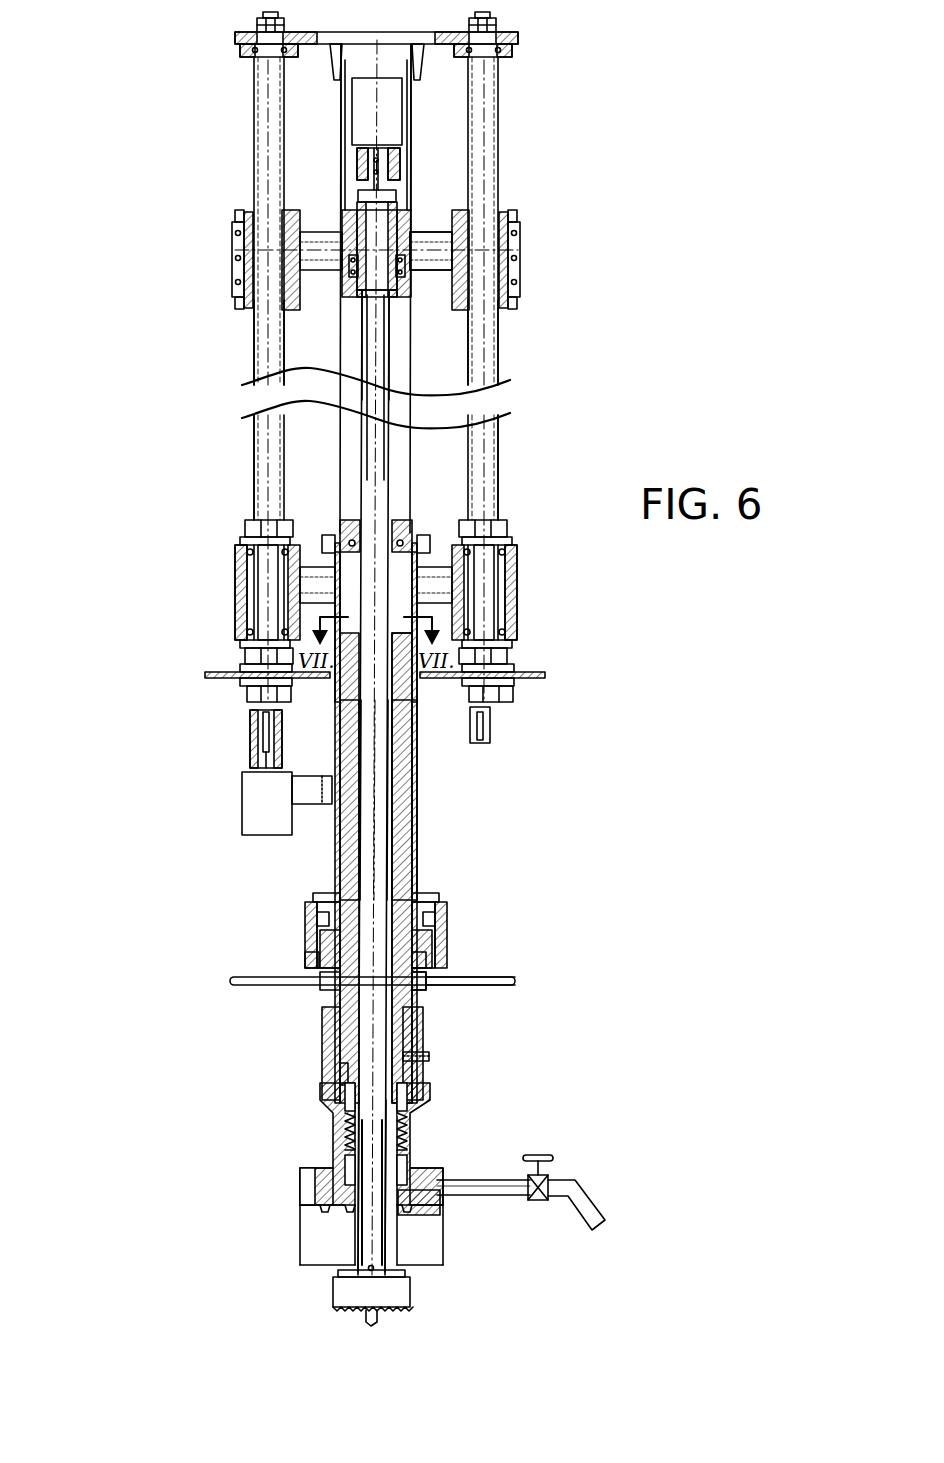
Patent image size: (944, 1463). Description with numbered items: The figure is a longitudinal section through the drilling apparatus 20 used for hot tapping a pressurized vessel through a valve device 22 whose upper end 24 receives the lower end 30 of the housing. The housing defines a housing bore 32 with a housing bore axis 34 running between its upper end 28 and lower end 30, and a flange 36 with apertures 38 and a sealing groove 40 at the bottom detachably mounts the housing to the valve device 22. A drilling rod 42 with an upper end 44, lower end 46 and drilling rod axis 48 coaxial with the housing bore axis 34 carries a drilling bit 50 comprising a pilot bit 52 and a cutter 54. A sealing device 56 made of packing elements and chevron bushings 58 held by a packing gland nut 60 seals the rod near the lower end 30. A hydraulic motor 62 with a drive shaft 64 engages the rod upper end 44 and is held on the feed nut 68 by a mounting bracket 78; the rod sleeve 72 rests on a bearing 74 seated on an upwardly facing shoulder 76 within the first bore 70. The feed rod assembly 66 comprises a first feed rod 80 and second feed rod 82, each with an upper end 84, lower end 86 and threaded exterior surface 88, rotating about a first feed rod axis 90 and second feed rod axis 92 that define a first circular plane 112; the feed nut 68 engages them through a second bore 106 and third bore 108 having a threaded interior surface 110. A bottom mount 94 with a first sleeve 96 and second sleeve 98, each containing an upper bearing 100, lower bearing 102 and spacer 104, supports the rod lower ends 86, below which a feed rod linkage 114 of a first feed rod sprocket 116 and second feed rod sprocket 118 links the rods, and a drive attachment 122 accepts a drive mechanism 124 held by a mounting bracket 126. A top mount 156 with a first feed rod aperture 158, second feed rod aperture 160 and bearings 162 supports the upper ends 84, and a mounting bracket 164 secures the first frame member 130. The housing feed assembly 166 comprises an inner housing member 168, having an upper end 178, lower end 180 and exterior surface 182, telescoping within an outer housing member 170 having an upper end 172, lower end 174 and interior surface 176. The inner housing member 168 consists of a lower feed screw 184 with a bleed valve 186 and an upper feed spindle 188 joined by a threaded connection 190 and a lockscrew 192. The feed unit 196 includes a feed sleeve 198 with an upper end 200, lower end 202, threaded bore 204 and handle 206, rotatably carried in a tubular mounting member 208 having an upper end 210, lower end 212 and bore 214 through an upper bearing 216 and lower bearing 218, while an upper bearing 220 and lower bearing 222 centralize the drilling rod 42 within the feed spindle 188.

The drilling apparatus 20 is at (112, 240).
The valve device 22 is at (305, 1247).
The upper end 24 is at (325, 1227).
The upper end 28 is at (405, 530).
The lower end 30 is at (325, 1210).
The housing bore 32 is at (380, 832).
The housing bore axis 34 is at (372, 870).
The flange 36 is at (432, 1180).
The apertures 38 is at (314, 1177).
The groove 40 is at (405, 1227).
The drilling rod 42 is at (390, 369).
The upper end 44 is at (352, 200).
The lower end 46 is at (382, 1250).
The drilling rod axis 48 is at (383, 340).
The drilling bit 50 is at (413, 1302).
The pilot bit 52 is at (362, 1314).
The cutter 54 is at (342, 1290).
The sealing device 56 is at (398, 1137).
The packing elements and chevron bushings 58 is at (348, 1135).
The packing gland nut 60 is at (352, 1217).
The motor 62 is at (393, 112).
The drive shaft 64 is at (392, 165).
The feed rod assembly 66 is at (531, 264).
The feed nut 68 is at (433, 260).
The first bore 70 is at (383, 290).
The sleeve 72 is at (398, 232).
The bearing 74 is at (378, 270).
The upwardly facing shoulder 76 is at (347, 270).
The mounting bracket 78 is at (350, 165).
The first feed rod 80 is at (265, 357).
The second feed rod 82 is at (486, 362).
The upper end 84 is at (262, 60).
The lower end 86 is at (262, 507).
The exterior surface 88 is at (254, 472).
The first feed rod axis 90 is at (265, 447).
The second feed rod axis 92 is at (482, 442).
The bottom mount 94 is at (318, 570).
The first sleeve 96 is at (250, 597).
The second sleeve 98 is at (507, 604).
The upper bearing 100 is at (236, 552).
The lower bearing 102 is at (242, 628).
The spacer 104 is at (246, 577).
The second bore 106 is at (234, 240).
The third bore 108 is at (516, 242).
The threaded interior surface 110 is at (246, 273).
The first circular plane 112 is at (318, 248).
The feed rod linkage 114 is at (552, 676).
The first feed rod sprocket 116 is at (207, 676).
The second feed rod sprocket 118 is at (540, 681).
The drive attachment 122 is at (262, 732).
The drive mechanism 124 is at (250, 799).
The mounting bracket 126 is at (308, 795).
The first frame member 130 is at (386, 65).
The top mount 156 is at (382, 40).
The first feed rod aperture 158 is at (258, 40).
The second feed rod aperture 160 is at (494, 40).
The bearing 162 is at (248, 52).
The mounting bracket 164 is at (338, 58).
The housing feed assembly 166 is at (598, 1008).
The inner housing member 168 is at (415, 1037).
The outer housing member 170 is at (412, 778).
The upper end 172 is at (425, 558).
The lower end 174 is at (414, 891).
The interior surface 176 is at (404, 846).
The upper end 178 is at (408, 662).
The lower end 180 is at (420, 1207).
The exterior surface 182 is at (414, 800).
The lower feed screw 184 is at (330, 1097).
The bleed valve 186 is at (545, 1187).
The upper feed spindle 188 is at (346, 868).
The threaded connection 190 is at (326, 1042).
The lockscrew 192 is at (428, 1067).
The feed unit 196 is at (562, 946).
The feed sleeve 198 is at (422, 967).
The upper end 200 is at (417, 942).
The lower end 202 is at (422, 988).
The bore 204 is at (432, 981).
The handle 206 is at (500, 986).
The tubular mounting member 208 is at (308, 920).
The upper end 210 is at (314, 900).
The lower end 212 is at (308, 964).
The bore 214 is at (320, 938).
The upper bearing 216 is at (422, 927).
The lower bearing 218 is at (433, 952).
The upper bearing 220 is at (340, 702).
The lower bearing 222 is at (342, 1072).